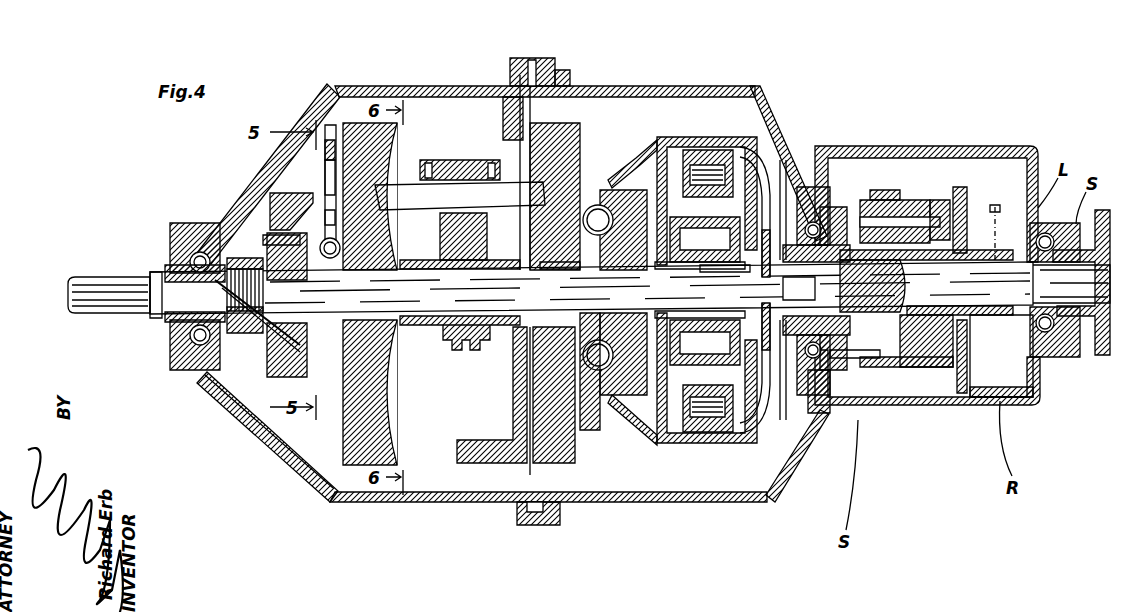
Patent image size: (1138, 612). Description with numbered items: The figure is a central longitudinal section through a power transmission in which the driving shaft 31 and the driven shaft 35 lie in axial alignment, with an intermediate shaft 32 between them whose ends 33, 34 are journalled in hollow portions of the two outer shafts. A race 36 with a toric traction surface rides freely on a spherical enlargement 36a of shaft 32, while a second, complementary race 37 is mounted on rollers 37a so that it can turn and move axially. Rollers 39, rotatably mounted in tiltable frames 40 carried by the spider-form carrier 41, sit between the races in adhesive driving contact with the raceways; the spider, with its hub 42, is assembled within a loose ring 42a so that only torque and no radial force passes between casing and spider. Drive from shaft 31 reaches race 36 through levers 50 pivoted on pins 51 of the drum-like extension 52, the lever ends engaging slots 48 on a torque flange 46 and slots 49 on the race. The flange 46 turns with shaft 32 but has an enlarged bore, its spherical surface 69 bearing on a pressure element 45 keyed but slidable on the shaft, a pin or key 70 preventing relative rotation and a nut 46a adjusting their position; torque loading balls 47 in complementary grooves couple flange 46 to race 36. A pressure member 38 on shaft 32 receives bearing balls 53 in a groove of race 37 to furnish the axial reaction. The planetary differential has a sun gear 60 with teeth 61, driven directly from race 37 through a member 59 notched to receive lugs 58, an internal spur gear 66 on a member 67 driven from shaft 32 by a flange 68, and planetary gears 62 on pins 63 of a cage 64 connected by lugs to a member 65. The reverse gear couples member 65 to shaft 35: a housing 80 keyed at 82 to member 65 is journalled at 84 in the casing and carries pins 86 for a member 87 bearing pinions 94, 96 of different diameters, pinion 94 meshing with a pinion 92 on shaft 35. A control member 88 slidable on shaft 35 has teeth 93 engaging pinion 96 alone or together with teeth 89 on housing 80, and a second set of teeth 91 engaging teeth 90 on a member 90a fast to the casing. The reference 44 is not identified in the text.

The driving shaft 31 is at (132, 312).
The intermediate shaft 32 is at (410, 316).
The end of intermediate shaft 33 is at (230, 302).
The end of intermediate shaft 34 is at (826, 388).
The driven shaft 35 is at (1092, 344).
The race 36 is at (368, 123).
The spherical enlargement 36a is at (380, 369).
The second race 37 is at (575, 130).
The rollers 37a is at (560, 313).
The pressure member 38 is at (612, 210).
The rollers 39 is at (414, 182).
The frames 40 is at (460, 160).
The carrier 41 is at (520, 204).
The hub 42 is at (484, 312).
The loose ring 42a is at (532, 60).
The flange 44 is at (564, 84).
The pressure element 45 is at (280, 330).
The torque flange 46 is at (331, 444).
The nut 46a is at (200, 366).
The torque loading balls 47 is at (262, 240).
The slots 48 is at (302, 224).
The slots 49 is at (328, 134).
The levers 50 is at (324, 156).
The pins 51 is at (324, 176).
The drum-like extension 52 is at (172, 226).
The bearing balls 53 is at (598, 204).
The lugs 58 is at (548, 506).
The member 59 is at (598, 436).
The sun gear 60 is at (692, 268).
The teeth of sun gear 61 is at (720, 265).
The planetary gears 62 is at (747, 150).
The pins 63 is at (782, 185).
The cage 64 is at (632, 180).
The member 65 is at (716, 146).
The internal spur gear 66 is at (700, 150).
The member 67 is at (788, 196).
The flange 68 is at (814, 216).
The spherical surface 69 is at (302, 356).
The pin or key 70 is at (262, 336).
The housing 80 is at (942, 200).
The key 82 is at (756, 330).
The journal 84 is at (814, 386).
The pins 86 is at (906, 200).
The member 87 is at (890, 218).
The control member 88 is at (920, 368).
The teeth 89 is at (994, 208).
The teeth 90 is at (1037, 191).
The member 90a is at (985, 222).
The second set of teeth 91 is at (994, 344).
The pinion 92 is at (840, 360).
The teeth 93 is at (914, 370).
The pinion 94 is at (874, 196).
The pinion 96 is at (958, 189).